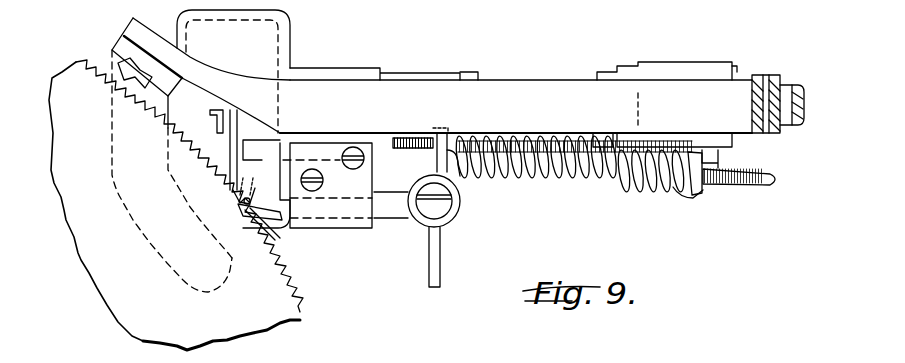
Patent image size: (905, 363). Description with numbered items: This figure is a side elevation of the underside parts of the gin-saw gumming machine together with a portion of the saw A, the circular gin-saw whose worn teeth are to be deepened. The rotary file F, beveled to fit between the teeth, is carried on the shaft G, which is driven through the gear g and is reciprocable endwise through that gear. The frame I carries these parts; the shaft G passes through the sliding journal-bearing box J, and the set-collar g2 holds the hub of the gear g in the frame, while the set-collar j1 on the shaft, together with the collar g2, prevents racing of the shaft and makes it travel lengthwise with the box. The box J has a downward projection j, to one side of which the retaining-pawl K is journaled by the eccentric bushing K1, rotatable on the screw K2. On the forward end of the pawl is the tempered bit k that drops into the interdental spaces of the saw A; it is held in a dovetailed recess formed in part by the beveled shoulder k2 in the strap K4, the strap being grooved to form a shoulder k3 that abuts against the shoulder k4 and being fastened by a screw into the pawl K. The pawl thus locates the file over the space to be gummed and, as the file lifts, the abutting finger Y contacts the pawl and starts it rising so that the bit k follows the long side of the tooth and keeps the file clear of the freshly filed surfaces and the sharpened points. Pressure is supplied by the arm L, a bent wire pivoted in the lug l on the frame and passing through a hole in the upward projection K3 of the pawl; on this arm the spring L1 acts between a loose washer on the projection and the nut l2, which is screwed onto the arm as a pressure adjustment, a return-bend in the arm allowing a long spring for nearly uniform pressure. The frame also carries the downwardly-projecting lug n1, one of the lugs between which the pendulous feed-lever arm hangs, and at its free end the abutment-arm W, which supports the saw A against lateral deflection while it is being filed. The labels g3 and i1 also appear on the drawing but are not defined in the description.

The abutment-arm W is at (112, 72).
The saw A is at (170, 313).
The frame I is at (407, 116).
The rotary file F is at (230, 143).
The guard housing g3 is at (242, 128).
The sliding journal-bearing box J is at (393, 75).
The set-collar j1 is at (467, 77).
The upward projection K3 is at (443, 148).
The lug n1 is at (583, 147).
The set-collar g2 is at (627, 67).
The gear g is at (735, 70).
The shaft G is at (792, 85).
The shoulder k4 is at (241, 181).
The bit k is at (233, 202).
The beveled shoulder k2 is at (234, 206).
The shoulder k3 is at (248, 203).
The strap K4 is at (250, 200).
The abutting piece or finger Y is at (340, 228).
The retaining-pawl K is at (388, 195).
The eccentric bushing K1 is at (458, 208).
The screw K2 is at (438, 203).
The downward projection j is at (417, 230).
The tab i1 is at (456, 178).
The spring L1 is at (633, 183).
The lug l is at (718, 155).
The nut l2 is at (692, 195).
The arm L is at (780, 182).